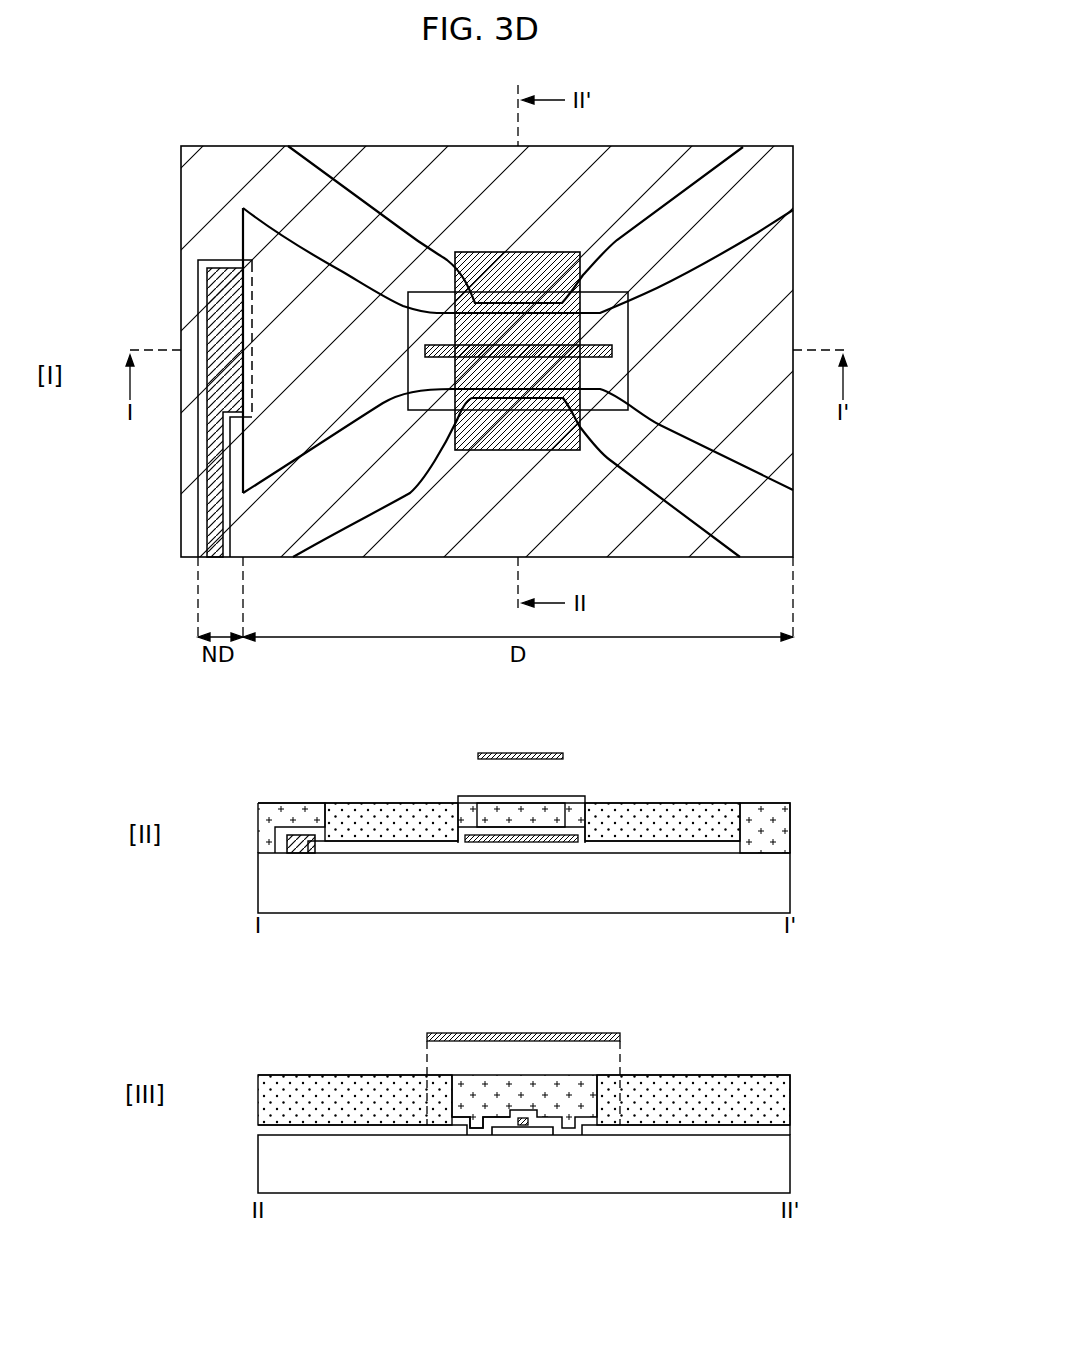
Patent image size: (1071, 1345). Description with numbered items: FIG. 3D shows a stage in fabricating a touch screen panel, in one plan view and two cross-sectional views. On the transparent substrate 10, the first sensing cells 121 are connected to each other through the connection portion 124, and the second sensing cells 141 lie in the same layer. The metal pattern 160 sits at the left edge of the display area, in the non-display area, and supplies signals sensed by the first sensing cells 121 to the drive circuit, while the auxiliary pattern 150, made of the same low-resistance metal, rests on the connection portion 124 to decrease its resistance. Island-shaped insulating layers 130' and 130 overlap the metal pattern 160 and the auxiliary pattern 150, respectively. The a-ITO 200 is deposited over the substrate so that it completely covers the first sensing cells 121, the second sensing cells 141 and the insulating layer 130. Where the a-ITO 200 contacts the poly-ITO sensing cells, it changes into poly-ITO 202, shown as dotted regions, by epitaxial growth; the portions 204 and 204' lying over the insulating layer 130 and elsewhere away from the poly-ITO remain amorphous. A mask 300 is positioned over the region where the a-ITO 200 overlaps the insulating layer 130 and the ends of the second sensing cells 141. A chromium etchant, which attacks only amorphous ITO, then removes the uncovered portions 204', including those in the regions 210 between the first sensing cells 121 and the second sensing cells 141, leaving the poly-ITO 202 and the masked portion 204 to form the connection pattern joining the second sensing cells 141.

The transparent substrate 10 is at (790, 895).
The (1-1)-th sensing cells 121 is at (250, 224).
The connection portion 124 is at (602, 312).
The insulating layer 130 is at (412, 671).
The insulating layer 130' is at (209, 555).
The (2-1)-th sensing cells 141 is at (623, 157).
The auxiliary pattern 150 is at (430, 358).
The metal pattern 160 is at (210, 484).
The a-ITO 200 is at (796, 819).
The poly-ITO 202 is at (707, 157).
The amorphous portion of the a-ITO 204 is at (524, 913).
The amorphous portions of the a-ITO 204' is at (526, 784).
The regions between the sensing cells 210 is at (792, 186).
The mask 300 is at (474, 252).